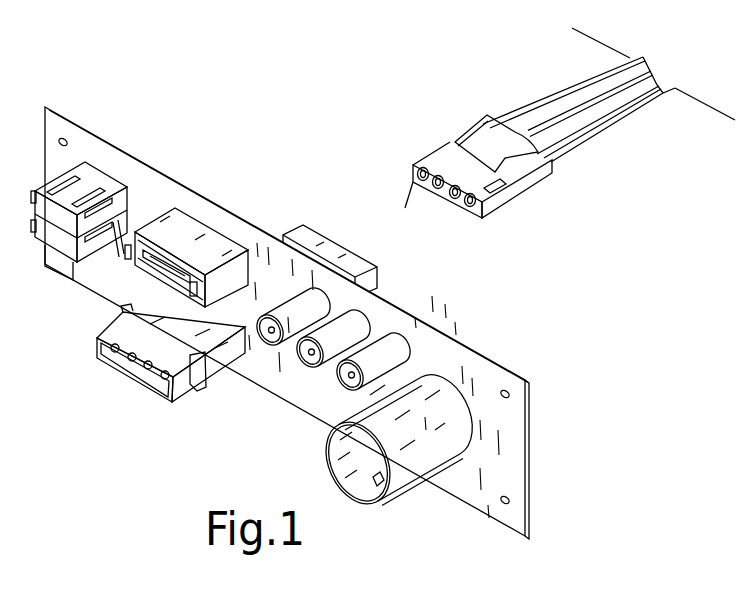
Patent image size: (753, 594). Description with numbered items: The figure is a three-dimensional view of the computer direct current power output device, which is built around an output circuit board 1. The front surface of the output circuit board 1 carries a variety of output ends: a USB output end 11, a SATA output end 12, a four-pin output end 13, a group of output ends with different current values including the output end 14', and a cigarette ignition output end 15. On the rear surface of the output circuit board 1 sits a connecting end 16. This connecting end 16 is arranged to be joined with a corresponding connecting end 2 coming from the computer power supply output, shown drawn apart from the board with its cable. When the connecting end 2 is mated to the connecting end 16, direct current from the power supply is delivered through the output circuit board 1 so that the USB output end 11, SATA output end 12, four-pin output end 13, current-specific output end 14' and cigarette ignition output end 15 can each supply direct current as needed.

The output circuit board 1 is at (192, 190).
The connecting end of the computer power supply output 2 is at (432, 160).
The USB output end 11 is at (71, 253).
The SATA output end 12 is at (157, 226).
The 4P output end 13 is at (123, 367).
The output end with different current value 14' is at (311, 381).
The cigarette ignition output end 15 is at (413, 482).
The connecting end 16 is at (312, 232).